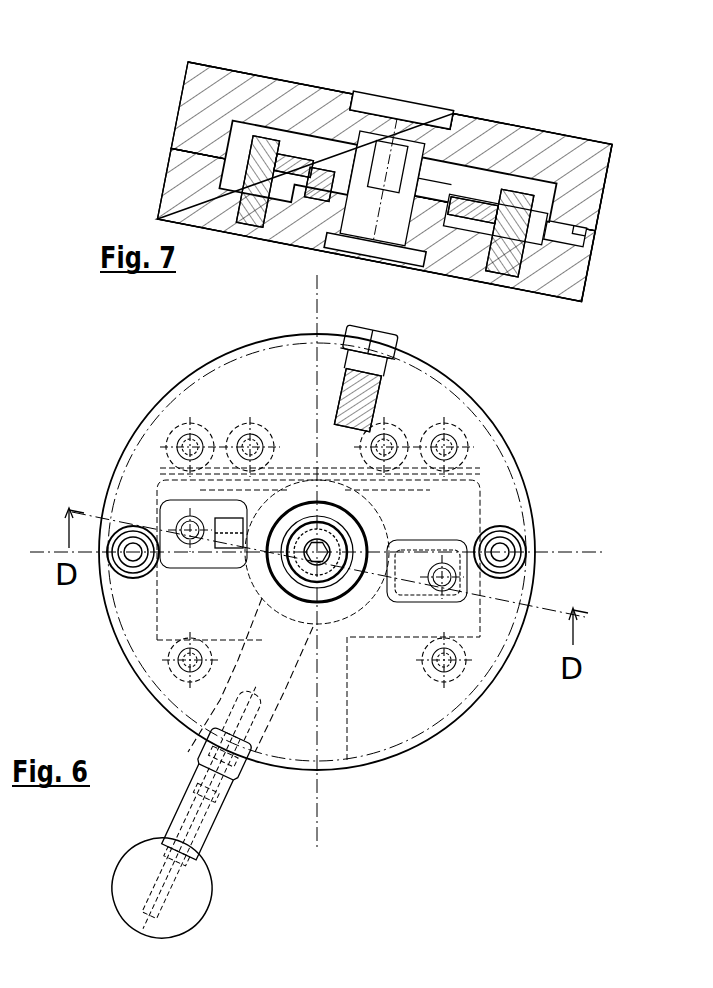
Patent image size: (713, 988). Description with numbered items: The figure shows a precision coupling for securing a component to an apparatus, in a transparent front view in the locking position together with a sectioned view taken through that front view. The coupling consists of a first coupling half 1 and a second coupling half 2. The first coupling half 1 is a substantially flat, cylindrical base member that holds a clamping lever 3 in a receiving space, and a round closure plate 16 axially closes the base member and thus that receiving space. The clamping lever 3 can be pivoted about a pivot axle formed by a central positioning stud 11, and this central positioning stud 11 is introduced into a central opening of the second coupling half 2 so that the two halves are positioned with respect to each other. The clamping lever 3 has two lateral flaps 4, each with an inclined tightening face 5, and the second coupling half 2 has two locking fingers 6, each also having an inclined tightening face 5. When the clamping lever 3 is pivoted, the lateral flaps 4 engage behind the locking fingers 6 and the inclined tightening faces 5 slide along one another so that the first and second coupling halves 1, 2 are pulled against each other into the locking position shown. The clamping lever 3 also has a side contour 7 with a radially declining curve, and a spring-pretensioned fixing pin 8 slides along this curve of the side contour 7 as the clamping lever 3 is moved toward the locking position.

In FIG. 7, the first coupling half 1 is at (598, 188).
In FIG. 7, the second coupling half 2 is at (566, 272).
In FIG. 7, the clamping lever 3 is at (455, 193).
In FIG. 6, the clamping lever 3 is at (277, 650).
In FIG. 6, the lateral flaps 4 is at (227, 540).
In FIG. 7, the inclined tightening face 5 is at (300, 152).
In FIG. 7, the locking fingers 6 is at (497, 186).
In FIG. 6, the locking fingers 6 is at (151, 505).
In FIG. 6, the side contour 7 is at (323, 485).
In FIG. 6, the fixing pin 8 is at (338, 457).
In FIG. 7, the central positioning stud 11 is at (404, 216).
In FIG. 7, the closure plate 16 is at (572, 238).